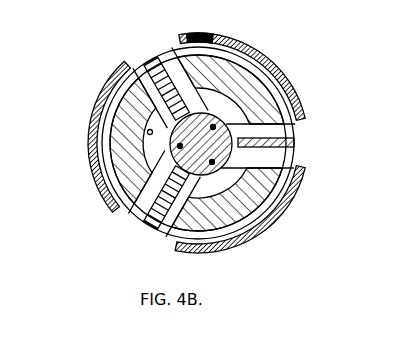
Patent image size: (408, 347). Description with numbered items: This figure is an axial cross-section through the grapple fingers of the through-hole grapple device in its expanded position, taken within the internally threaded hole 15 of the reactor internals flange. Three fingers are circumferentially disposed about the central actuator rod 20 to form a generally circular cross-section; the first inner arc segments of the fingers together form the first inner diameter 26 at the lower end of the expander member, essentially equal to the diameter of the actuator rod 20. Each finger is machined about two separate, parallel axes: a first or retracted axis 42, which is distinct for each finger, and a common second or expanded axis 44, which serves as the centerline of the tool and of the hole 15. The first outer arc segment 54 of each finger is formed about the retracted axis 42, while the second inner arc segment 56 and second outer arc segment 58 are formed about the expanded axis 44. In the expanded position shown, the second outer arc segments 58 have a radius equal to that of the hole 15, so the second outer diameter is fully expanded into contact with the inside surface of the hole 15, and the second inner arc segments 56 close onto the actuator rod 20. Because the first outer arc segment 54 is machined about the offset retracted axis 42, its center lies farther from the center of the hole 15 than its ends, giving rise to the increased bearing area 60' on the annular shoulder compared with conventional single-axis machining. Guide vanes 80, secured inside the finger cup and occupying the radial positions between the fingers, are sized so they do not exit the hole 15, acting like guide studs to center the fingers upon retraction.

The threaded hole 15 is at (165, 56).
The actuator rod 20 is at (125, 207).
The first inner diameter 26 is at (140, 114).
The first axis 42 is at (213, 127).
The second axis 44 is at (140, 180).
The first outer arc segment 54 is at (208, 20).
The second inner arc segment 56 is at (225, 113).
The second outer arc segment 58 is at (222, 42).
The bearing area 60' is at (206, 132).
The guide vanes 80 is at (300, 143).